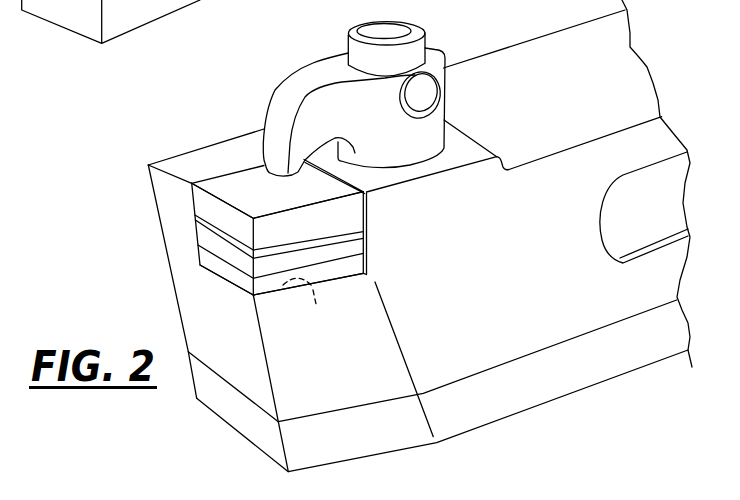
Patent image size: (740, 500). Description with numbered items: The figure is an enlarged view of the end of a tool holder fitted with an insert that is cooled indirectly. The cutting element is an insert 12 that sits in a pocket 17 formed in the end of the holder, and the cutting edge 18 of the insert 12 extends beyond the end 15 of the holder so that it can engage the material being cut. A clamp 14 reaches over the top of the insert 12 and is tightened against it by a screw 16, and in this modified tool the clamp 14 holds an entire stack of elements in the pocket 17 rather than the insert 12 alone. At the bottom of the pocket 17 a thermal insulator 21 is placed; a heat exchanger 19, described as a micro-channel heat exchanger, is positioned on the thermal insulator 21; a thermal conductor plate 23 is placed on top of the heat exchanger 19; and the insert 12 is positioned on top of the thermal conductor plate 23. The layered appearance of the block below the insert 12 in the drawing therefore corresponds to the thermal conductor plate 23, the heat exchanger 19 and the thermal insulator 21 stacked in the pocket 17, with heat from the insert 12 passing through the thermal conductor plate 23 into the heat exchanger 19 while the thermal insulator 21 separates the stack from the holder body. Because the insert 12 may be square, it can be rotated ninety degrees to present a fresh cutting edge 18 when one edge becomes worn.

The insert 12 is at (353, 185).
The clamp 14 is at (302, 80).
The end of the holder 15 is at (208, 292).
The screw 16 is at (373, 32).
The pocket 17 is at (370, 207).
The cutting edge 18 is at (212, 193).
The heat exchanger 19 is at (366, 252).
The thermal insulator 21 is at (351, 272).
The thermal conductor plate 23 is at (360, 232).